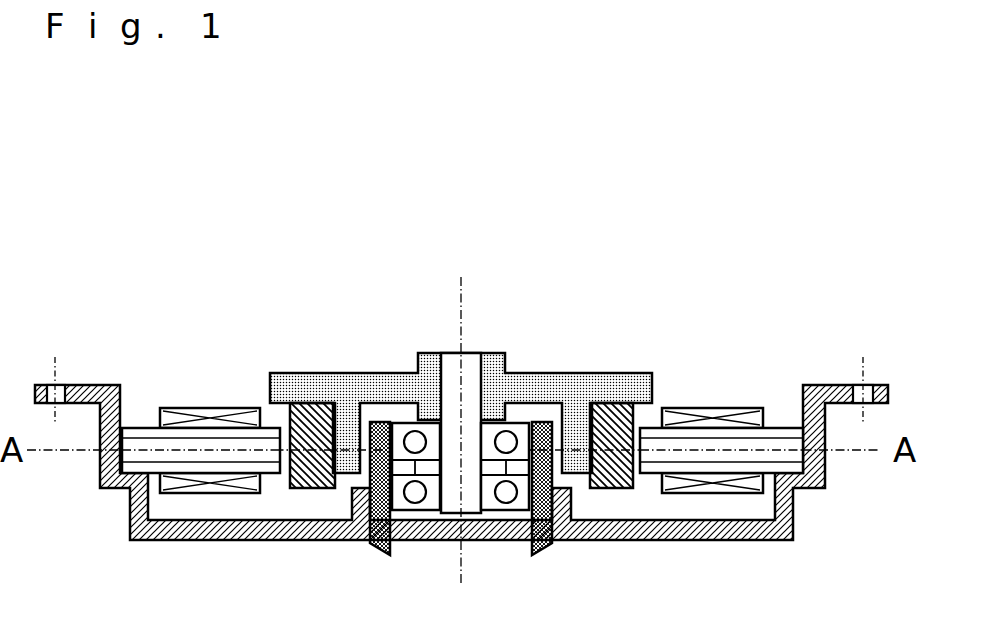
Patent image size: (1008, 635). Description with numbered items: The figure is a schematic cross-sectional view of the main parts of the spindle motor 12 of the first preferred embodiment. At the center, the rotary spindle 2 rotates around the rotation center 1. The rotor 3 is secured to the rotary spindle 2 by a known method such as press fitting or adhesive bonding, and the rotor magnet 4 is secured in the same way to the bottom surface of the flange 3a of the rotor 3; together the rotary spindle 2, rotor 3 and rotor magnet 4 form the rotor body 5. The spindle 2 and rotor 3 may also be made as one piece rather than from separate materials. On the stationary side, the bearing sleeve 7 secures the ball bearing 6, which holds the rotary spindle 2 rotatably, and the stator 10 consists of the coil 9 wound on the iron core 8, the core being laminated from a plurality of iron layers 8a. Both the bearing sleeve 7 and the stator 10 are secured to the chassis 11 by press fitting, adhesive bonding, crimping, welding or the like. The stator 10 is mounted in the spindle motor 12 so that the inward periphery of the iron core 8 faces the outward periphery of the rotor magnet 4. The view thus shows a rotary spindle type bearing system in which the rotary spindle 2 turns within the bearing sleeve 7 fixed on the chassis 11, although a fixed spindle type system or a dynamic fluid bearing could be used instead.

The rotation center 1 is at (462, 303).
The rotary spindle 2 is at (453, 378).
The rotor 3 is at (370, 385).
The flange 3a is at (320, 387).
The rotor magnet 4 is at (303, 403).
The rotor body 5 is at (380, 238).
The ball bearing 6 is at (525, 488).
The bearing sleeve 7 is at (553, 487).
The iron core 8 is at (207, 268).
The iron layers 8a is at (255, 304).
The coil 9 is at (170, 485).
The stator 10 is at (215, 238).
The chassis 11 is at (100, 385).
The spindle motor 12 is at (748, 183).